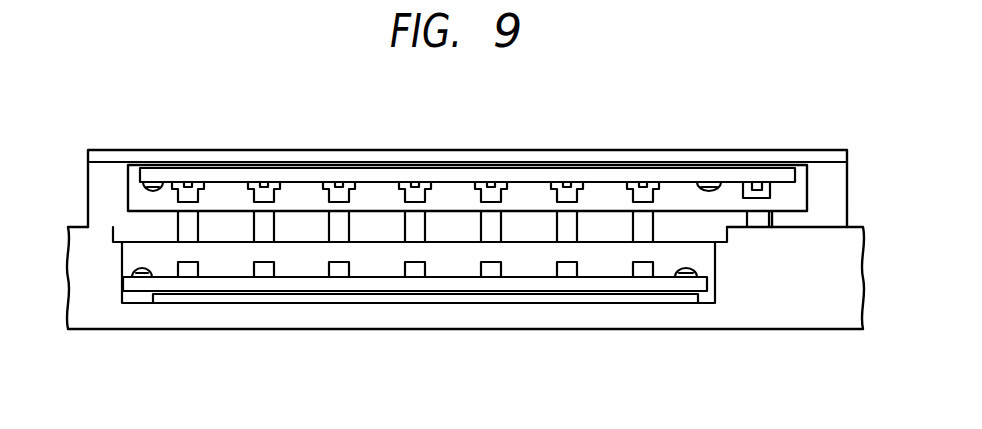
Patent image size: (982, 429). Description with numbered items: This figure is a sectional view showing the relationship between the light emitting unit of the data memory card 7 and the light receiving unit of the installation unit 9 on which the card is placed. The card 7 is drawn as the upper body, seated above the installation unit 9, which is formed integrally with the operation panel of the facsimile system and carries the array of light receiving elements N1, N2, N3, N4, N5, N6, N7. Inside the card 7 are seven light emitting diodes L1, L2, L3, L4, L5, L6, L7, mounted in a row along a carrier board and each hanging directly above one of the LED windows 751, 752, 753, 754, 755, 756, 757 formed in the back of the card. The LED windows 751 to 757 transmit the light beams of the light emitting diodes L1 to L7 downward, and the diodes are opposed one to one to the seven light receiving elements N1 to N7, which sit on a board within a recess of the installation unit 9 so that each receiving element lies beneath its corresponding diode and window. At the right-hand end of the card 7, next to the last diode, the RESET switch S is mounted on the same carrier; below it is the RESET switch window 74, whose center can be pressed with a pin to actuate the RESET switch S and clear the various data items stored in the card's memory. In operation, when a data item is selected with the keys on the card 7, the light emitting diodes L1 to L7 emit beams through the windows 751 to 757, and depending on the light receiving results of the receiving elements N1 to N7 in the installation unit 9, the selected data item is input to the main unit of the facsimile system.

The data memory card 7 is at (833, 172).
The RESET switch window 74 is at (765, 222).
The LED window 751 is at (648, 217).
The LED window 752 is at (572, 217).
The LED window 753 is at (495, 217).
The LED window 754 is at (420, 217).
The LED window 755 is at (343, 217).
The LED window 756 is at (268, 217).
The LED window 757 is at (192, 217).
The installation unit 9 is at (762, 315).
The RESET switch S is at (757, 182).
The light emitting diode L1 is at (647, 183).
The light emitting diode L2 is at (568, 183).
The light emitting diode L3 is at (493, 183).
The light emitting diode L4 is at (418, 183).
The light emitting diode L5 is at (342, 183).
The light emitting diode L6 is at (268, 183).
The light emitting diode L7 is at (194, 183).
The light receiving element N1 is at (643, 270).
The light receiving element N2 is at (567, 270).
The light receiving element N3 is at (491, 270).
The light receiving element N4 is at (415, 270).
The light receiving element N5 is at (339, 270).
The light receiving element N6 is at (264, 270).
The light receiving element N7 is at (188, 270).